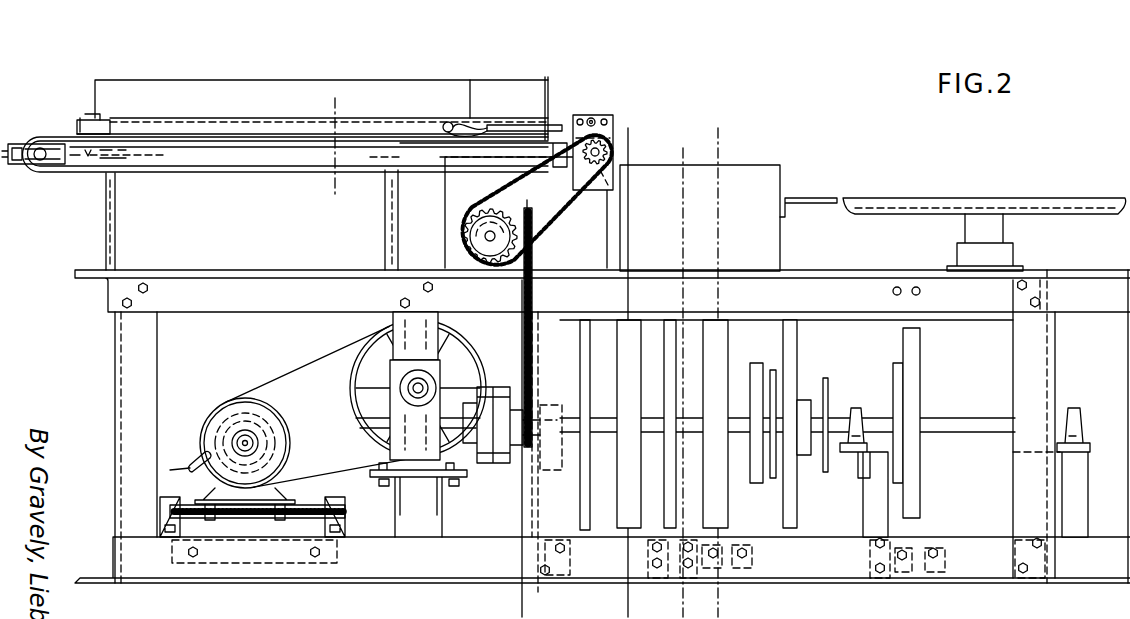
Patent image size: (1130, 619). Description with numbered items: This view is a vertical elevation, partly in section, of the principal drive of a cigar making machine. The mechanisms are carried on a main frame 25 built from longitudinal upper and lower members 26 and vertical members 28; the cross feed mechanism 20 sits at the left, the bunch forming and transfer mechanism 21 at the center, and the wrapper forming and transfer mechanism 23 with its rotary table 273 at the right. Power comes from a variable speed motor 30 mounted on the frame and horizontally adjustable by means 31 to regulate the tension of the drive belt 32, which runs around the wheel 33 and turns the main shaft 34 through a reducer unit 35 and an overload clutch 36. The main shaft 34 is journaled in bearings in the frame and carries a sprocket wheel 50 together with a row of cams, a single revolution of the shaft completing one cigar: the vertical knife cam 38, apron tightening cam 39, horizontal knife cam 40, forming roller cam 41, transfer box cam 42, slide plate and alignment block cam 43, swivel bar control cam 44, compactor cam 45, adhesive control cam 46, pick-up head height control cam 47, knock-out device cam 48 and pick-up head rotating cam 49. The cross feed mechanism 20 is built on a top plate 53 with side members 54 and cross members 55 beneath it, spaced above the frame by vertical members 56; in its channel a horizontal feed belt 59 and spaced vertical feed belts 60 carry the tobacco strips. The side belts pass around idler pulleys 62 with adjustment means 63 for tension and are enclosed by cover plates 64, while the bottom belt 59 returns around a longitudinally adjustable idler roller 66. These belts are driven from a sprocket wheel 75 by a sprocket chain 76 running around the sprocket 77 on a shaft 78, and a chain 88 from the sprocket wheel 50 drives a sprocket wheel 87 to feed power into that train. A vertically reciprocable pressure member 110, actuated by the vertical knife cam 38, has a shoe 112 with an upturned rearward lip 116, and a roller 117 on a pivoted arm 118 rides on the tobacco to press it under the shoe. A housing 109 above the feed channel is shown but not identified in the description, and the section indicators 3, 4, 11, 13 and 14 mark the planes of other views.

The cross feed mechanism 20 is at (284, 160).
The bunch forming and transfer mechanism 21 is at (713, 121).
The wrapper forming and transfer mechanism 23 is at (984, 202).
The rotary table 273 is at (1022, 198).
The main frame 25 is at (113, 340).
The longitudinal upper and lower members 26 is at (190, 306).
The vertical members 28 is at (120, 456).
The variable speed motor 30 is at (229, 408).
The adjusting means 31 is at (181, 489).
The drive belt 32 is at (308, 364).
The wheel 33 is at (399, 424).
The main shaft 34 is at (969, 420).
The reducer unit 35 is at (372, 430).
The overload clutch 36 is at (505, 385).
The vertical knife cam 38 is at (602, 447).
The apron tightening cam 39 is at (624, 510).
The horizontal knife cam 40 is at (637, 400).
The forming roller cam 41 is at (673, 405).
The transfer box cam 42 is at (710, 466).
The slide plate and alignment block cam 43 is at (730, 321).
The swivel bar control cam 44 is at (754, 362).
The compactor cam 45 is at (773, 370).
The adhesive control cam 46 is at (798, 524).
The pick-up head height control cam 47 is at (829, 386).
The knock-out device cam 48 is at (904, 368).
The pick-up head rotating cam 49 is at (921, 505).
The sprocket wheel 50 is at (523, 445).
The top plate 53 is at (258, 166).
The side members 54 is at (216, 167).
The cross members 55 is at (242, 156).
The vertical members 56 is at (105, 240).
The horizontal feed belt 59 is at (232, 128).
The vertical feed belts 60 is at (102, 118).
The idler pulleys 62 is at (78, 126).
The adjustment means 63 is at (135, 139).
The cover plates 64 is at (415, 125).
The idler roller 66 is at (36, 173).
The sprocket wheel 75 is at (613, 128).
The sprocket chain 76 is at (497, 198).
The sprocket 77 is at (507, 212).
The shaft 78 is at (488, 237).
The sprocket wheel 87 is at (533, 249).
The chain 88 is at (522, 318).
The housing 109 is at (303, 80).
The pressure member 110 is at (505, 97).
The shoe 112 is at (506, 125).
The rearward lip 116 is at (466, 123).
The roller 117 is at (460, 130).
The arm 118 is at (462, 120).
The section line 3- 3 is at (337, 105).
The section line 4- 4 is at (548, 101).
The section line 11- 11 is at (718, 137).
The section line 13- 13 is at (683, 153).
The section line 14- 14 is at (628, 138).